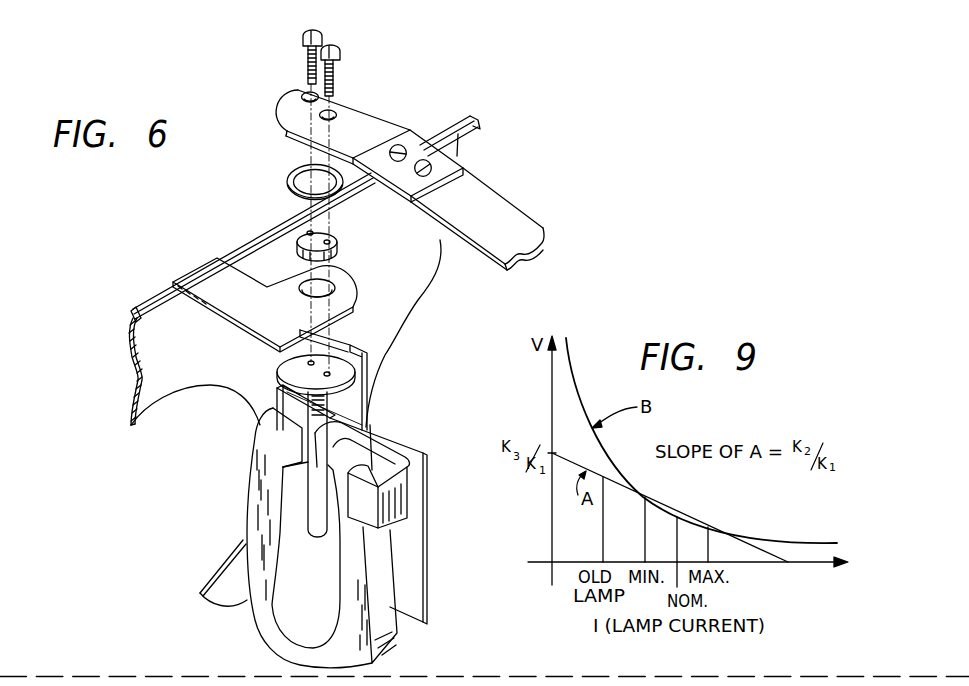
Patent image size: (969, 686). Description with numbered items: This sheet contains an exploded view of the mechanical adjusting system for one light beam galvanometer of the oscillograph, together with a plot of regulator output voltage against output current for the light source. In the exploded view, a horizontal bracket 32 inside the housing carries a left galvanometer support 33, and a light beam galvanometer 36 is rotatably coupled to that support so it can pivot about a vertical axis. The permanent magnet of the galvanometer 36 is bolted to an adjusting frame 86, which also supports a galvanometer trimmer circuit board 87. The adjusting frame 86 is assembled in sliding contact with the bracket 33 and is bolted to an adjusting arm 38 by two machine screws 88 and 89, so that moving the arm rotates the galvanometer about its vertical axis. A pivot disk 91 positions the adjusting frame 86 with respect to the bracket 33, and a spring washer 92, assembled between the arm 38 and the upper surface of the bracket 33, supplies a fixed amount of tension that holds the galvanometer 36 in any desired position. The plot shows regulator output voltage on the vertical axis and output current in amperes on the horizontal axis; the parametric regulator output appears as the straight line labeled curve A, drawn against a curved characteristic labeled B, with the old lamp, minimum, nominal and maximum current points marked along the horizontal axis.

The horizontal bracket 32 is at (133, 370).
The left galvanometer support 33 is at (228, 293).
The light beam galvanometer 36 is at (397, 427).
The adjusting arm 38 is at (483, 212).
The adjusting frame 86 is at (410, 484).
The galvanometer trimmer circuit board 87 is at (423, 566).
The machine screw 88 is at (305, 59).
The machine screw 89 is at (338, 80).
The pivot disk 91 is at (340, 238).
The spring washer 92 is at (289, 176).